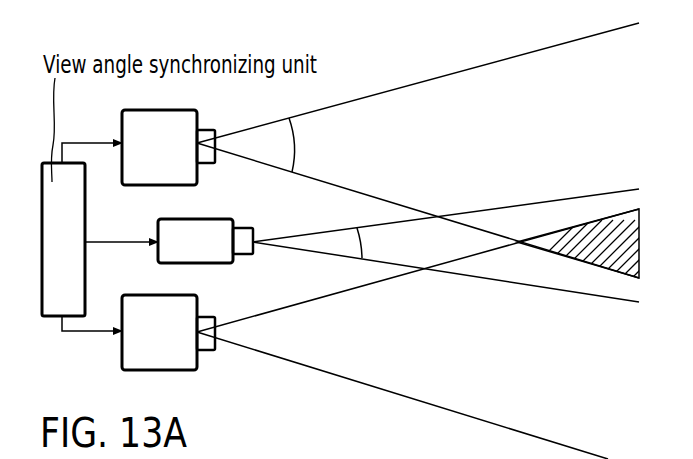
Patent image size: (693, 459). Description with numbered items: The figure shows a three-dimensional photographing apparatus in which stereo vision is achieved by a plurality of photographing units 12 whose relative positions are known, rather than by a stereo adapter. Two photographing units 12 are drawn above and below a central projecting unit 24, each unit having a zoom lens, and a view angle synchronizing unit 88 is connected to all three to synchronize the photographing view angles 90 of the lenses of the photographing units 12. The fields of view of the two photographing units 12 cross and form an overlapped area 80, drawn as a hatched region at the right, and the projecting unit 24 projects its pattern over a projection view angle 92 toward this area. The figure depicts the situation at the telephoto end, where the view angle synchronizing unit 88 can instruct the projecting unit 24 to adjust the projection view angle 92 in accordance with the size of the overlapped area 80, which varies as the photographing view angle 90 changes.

The photographing unit 12 is at (199, 113).
The projecting unit 24 is at (214, 219).
The view angle synchronizing unit 88 is at (85, 197).
The photographing view angle 90 is at (297, 140).
The projection view angle 92 is at (362, 258).
The overlapped area 80 is at (604, 276).